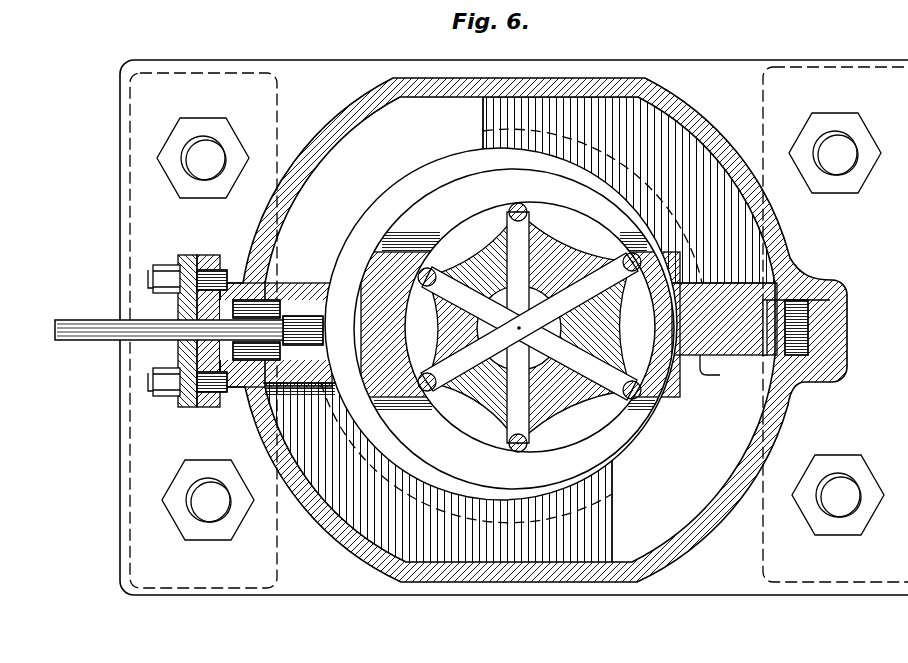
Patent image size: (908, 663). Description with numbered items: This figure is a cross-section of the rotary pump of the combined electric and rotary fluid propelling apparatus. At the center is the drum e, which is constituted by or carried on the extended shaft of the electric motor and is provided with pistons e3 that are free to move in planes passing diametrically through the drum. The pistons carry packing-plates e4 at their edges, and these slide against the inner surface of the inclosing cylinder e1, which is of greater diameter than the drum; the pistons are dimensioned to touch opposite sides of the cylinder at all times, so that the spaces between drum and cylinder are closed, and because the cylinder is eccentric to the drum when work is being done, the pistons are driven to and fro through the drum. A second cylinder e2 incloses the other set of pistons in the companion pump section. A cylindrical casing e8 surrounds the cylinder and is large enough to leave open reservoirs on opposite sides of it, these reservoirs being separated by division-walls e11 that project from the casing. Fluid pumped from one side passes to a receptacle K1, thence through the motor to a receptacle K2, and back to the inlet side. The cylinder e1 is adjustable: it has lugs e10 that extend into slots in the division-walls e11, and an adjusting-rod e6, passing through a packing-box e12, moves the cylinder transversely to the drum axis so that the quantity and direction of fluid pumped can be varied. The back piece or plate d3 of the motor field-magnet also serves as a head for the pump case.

The back piece or plate d3 is at (514, 327).
The cylindrical casing e8 is at (328, 140).
The receptacle K2 is at (596, 190).
The receptacle K1 is at (473, 473).
The division-walls e11 is at (310, 293).
The lugs e10 is at (345, 318).
The packing-box e12 is at (198, 305).
The adjusting-rod e6 is at (83, 330).
The cylinder e1 is at (380, 386).
The drum e is at (602, 323).
The pistons e3 is at (529, 327).
The packing-plates e4 is at (634, 272).
The cylinder e2 is at (518, 451).